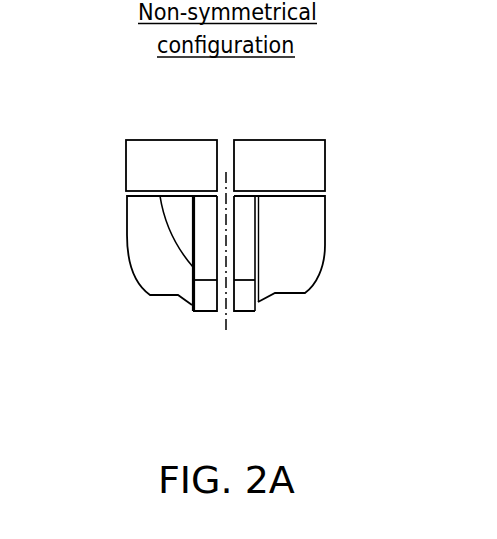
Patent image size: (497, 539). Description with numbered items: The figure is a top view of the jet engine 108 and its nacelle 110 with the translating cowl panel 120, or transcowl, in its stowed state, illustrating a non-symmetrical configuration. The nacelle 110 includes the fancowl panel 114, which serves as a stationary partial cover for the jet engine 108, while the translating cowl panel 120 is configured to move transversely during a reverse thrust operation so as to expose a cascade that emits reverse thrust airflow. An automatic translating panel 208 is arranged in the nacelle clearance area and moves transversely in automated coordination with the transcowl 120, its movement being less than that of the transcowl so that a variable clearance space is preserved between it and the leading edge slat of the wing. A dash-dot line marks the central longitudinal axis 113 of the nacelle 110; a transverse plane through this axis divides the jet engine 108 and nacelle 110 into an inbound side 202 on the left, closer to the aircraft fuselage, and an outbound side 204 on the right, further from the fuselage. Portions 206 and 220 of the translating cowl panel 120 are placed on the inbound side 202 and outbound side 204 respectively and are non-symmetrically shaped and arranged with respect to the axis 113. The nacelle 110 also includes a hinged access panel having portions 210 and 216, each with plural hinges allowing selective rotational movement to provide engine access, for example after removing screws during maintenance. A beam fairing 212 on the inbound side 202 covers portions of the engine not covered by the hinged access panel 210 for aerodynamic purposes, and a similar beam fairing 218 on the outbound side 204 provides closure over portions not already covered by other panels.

The jet engine 108 is at (294, 124).
The nacelle 110 is at (378, 115).
The central longitudinal axis 113 is at (225, 298).
The fancowl panel 114 is at (163, 167).
The translating cowl panel 120 is at (167, 275).
The inbound side 202 is at (217, 398).
The outbound side 204 is at (335, 398).
The inbound portion of the translating cowl panel 206 is at (143, 262).
The automatic translating panel 208 is at (180, 218).
The hinged access panel 210 is at (207, 208).
The beam fairing 212 is at (200, 282).
The second portion of the hinged access panel 216 is at (247, 217).
The beam fairing 218 is at (247, 283).
The outbound portion of the translating cowl panel 220 is at (298, 248).